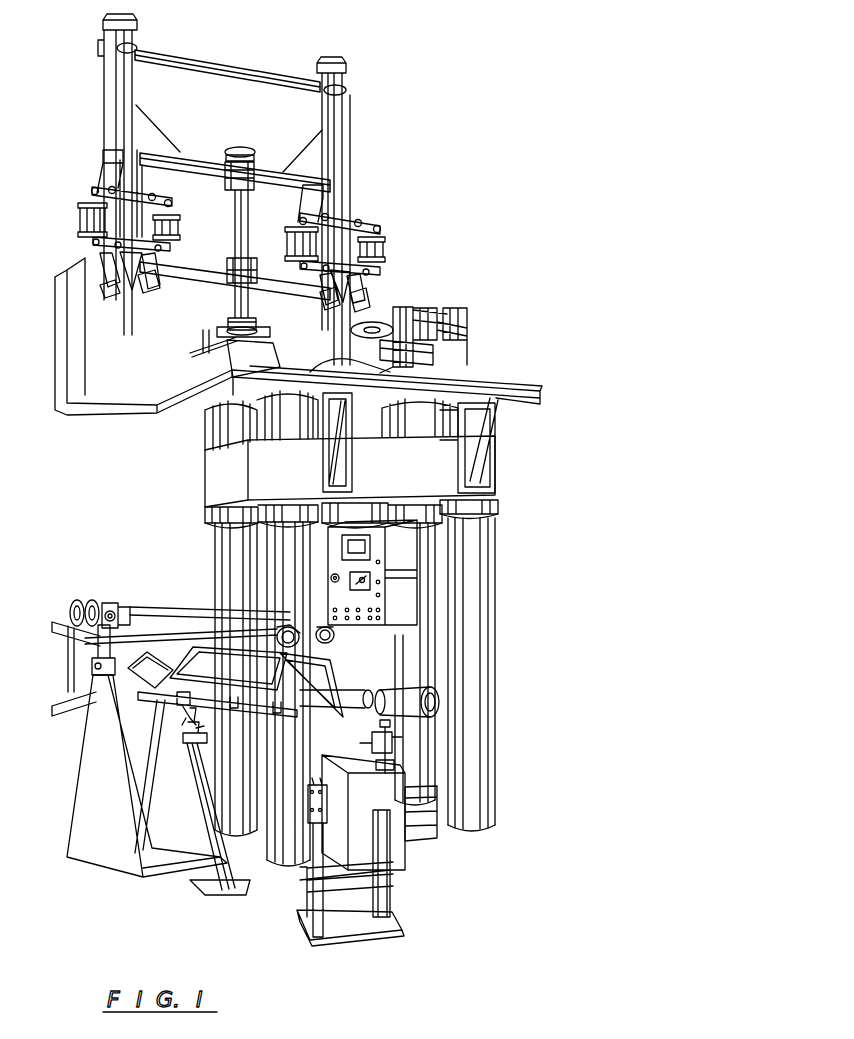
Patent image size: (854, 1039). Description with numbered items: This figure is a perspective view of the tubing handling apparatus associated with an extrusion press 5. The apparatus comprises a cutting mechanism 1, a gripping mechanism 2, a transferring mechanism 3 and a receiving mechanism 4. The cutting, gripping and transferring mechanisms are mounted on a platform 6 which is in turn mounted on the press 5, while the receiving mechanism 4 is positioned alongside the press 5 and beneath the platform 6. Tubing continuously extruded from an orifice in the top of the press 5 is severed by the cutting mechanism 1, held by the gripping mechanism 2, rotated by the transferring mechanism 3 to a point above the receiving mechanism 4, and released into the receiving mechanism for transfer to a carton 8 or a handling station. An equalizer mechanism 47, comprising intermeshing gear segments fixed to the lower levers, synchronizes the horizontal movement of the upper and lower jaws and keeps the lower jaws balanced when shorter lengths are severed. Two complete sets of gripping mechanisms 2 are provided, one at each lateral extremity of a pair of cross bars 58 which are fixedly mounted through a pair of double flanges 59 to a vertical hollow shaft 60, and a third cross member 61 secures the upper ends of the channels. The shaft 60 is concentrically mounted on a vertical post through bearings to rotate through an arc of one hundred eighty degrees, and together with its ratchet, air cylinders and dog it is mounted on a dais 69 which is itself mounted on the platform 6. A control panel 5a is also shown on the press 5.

The cutting mechanism 1 is at (462, 302).
The gripping mechanism 2 is at (86, 156).
The transferring mechanism 3 is at (246, 134).
The receiving mechanism 4 is at (114, 576).
The extrusion press 5 is at (513, 669).
The control panel 5a is at (374, 600).
The platform 6 is at (530, 385).
The carton 8 is at (437, 705).
The equalizer mechanism 47 is at (390, 287).
The cross bars 58 is at (194, 276).
The double flanges 59 is at (259, 277).
The vertical hollow shaft 60 is at (235, 300).
The third cross member 61 is at (230, 70).
The dais 69 is at (215, 358).